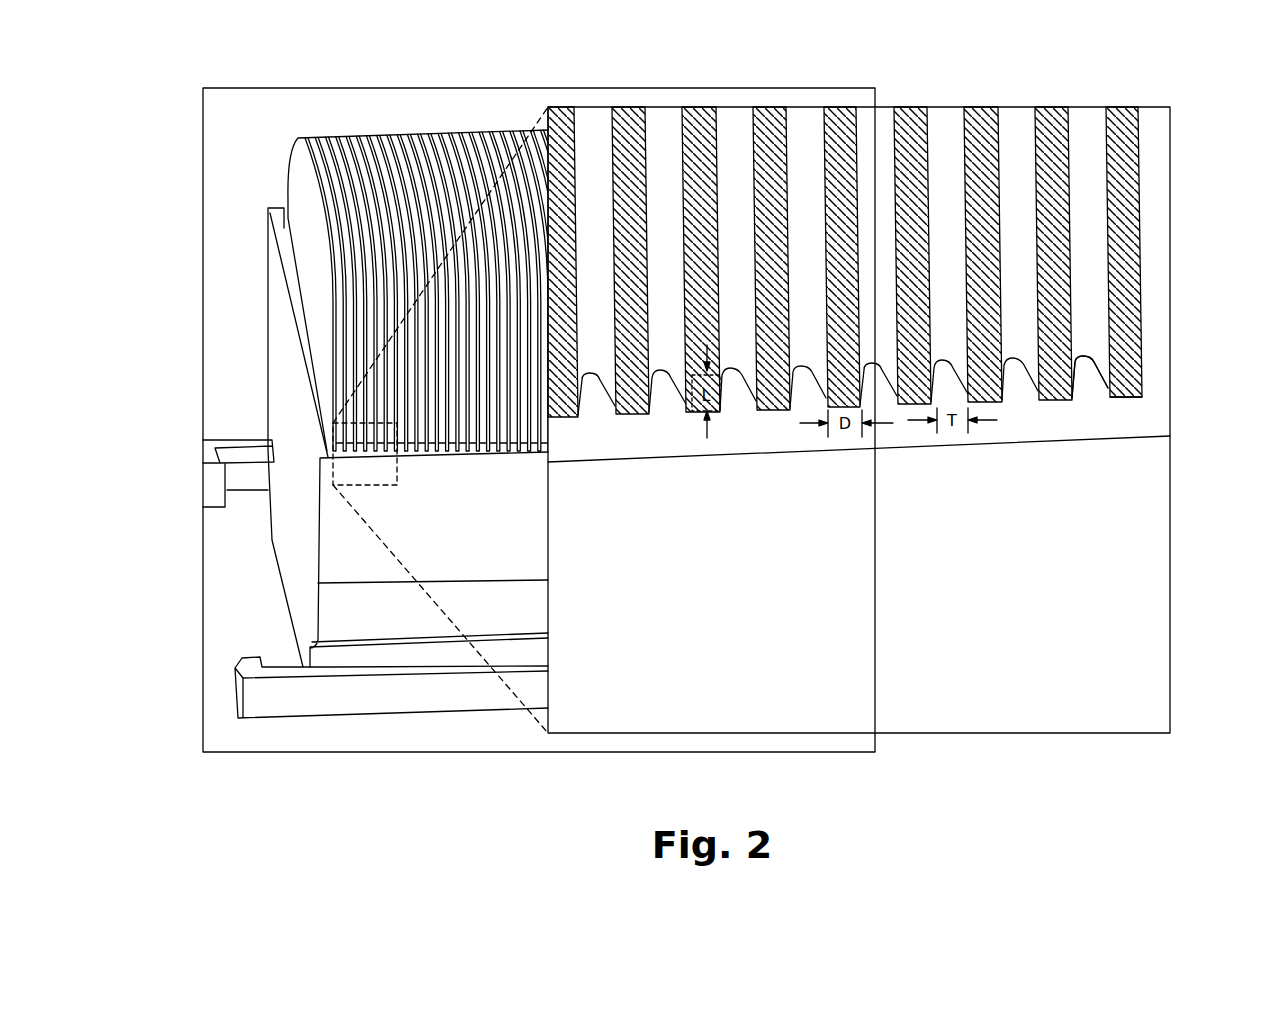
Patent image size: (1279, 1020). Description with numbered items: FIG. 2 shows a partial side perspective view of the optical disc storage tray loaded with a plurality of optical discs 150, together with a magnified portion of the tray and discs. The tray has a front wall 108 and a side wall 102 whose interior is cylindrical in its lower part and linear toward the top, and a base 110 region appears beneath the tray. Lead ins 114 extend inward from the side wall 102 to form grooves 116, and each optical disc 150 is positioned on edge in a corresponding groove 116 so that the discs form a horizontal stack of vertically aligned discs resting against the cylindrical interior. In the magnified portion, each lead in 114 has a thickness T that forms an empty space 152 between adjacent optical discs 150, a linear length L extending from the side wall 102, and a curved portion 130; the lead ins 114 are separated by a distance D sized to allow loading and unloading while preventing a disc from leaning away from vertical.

The side wall 102 is at (330, 522).
The front wall 108 is at (275, 310).
The base rail 110 is at (400, 665).
The lead-in 114 is at (1158, 360).
The groove 116 is at (1130, 397).
The curved portion 130 is at (1093, 350).
The optical disc 150 is at (300, 142).
The empty space 152 is at (1092, 120).